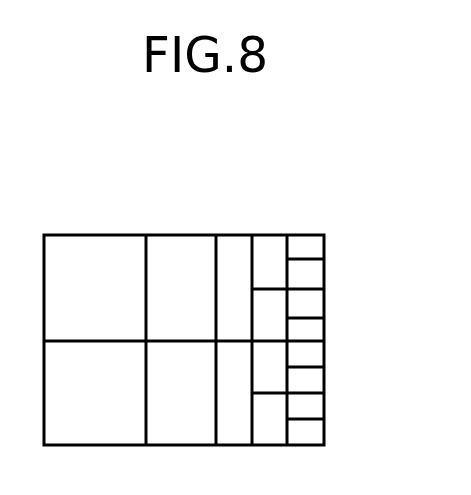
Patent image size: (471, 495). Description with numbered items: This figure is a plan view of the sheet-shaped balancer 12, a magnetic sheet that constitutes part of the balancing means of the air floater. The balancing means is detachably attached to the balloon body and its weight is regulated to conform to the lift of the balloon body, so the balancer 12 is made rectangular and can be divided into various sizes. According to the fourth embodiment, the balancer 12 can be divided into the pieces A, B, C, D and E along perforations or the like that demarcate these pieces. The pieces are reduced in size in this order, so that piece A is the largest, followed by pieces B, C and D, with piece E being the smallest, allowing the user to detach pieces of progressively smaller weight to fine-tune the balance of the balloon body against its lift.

The balancer 12 is at (327, 330).
The piece A is at (63, 250).
The piece B is at (160, 250).
The piece C is at (226, 248).
The piece D is at (262, 248).
The piece E is at (305, 242).